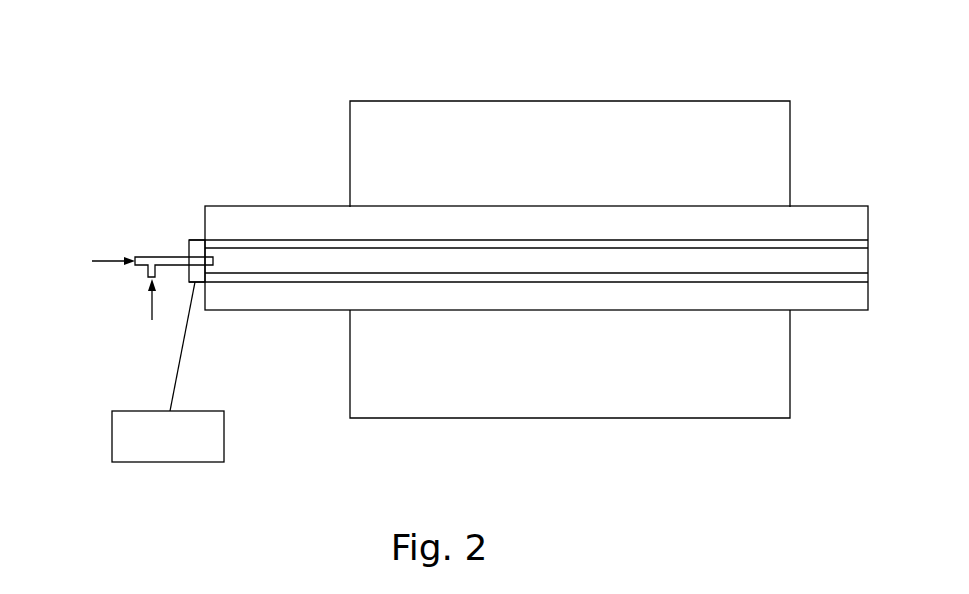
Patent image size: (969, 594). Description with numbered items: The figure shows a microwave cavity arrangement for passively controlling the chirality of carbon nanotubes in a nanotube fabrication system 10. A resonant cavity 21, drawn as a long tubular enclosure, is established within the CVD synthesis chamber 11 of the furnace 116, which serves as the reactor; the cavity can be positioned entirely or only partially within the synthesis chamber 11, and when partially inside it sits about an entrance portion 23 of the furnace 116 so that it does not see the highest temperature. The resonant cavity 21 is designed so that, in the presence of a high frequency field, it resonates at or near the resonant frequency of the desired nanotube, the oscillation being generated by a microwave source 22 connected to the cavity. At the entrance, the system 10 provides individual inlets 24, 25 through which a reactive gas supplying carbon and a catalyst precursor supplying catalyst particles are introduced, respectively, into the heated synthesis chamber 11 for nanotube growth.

The system 10 is at (270, 60).
The synthesis chamber 11 is at (800, 240).
The resonant cavity 21 is at (323, 273).
The source 22 is at (177, 462).
The entrance portion 23 is at (191, 257).
The inlet for reactive gas 24 is at (135, 260).
The inlet for catalyst precursor 25 is at (148, 277).
The furnace 116 is at (233, 312).